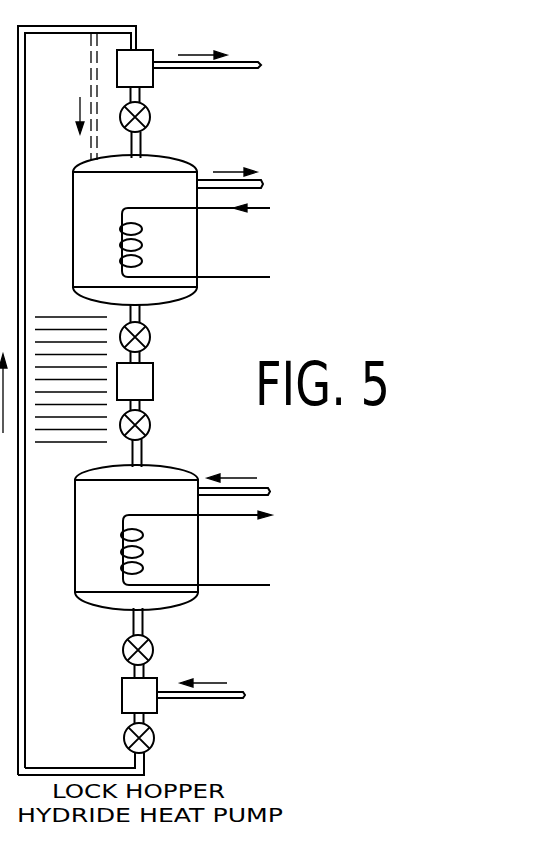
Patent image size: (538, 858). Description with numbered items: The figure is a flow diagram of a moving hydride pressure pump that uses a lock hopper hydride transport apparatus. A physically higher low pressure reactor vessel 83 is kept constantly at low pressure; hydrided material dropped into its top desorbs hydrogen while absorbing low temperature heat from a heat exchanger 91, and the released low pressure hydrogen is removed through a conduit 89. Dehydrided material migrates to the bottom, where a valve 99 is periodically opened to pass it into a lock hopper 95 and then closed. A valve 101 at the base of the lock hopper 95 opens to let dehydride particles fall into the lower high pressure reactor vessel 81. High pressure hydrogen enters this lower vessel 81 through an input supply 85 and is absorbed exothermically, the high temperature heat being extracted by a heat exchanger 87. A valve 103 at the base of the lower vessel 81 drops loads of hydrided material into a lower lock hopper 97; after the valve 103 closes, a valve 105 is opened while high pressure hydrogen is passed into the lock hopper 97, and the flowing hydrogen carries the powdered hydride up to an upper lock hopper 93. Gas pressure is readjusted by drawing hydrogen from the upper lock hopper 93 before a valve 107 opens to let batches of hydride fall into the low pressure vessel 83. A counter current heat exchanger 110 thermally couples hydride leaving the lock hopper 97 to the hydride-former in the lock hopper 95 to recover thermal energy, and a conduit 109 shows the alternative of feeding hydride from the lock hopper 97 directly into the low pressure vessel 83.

The high pressure reactor vessel 81 is at (175, 467).
The low pressure reactor vessel 83 is at (75, 159).
The input supply of high pressure hydrogen 85 is at (260, 487).
The heat exchanger 87 is at (225, 587).
The conduit 89 is at (262, 177).
The heat exchanger 91 is at (221, 281).
The upper lock hopper 93 is at (143, 62).
The lock hopper 95 is at (135, 383).
The lower lock hopper 97 is at (127, 698).
The valve 99 is at (152, 338).
The valve 101 is at (152, 425).
The valve 103 is at (157, 650).
The valve 105 is at (155, 737).
The valve 107 is at (147, 113).
The conduit 109 is at (90, 85).
The counter current heat exchanger 110 is at (80, 442).